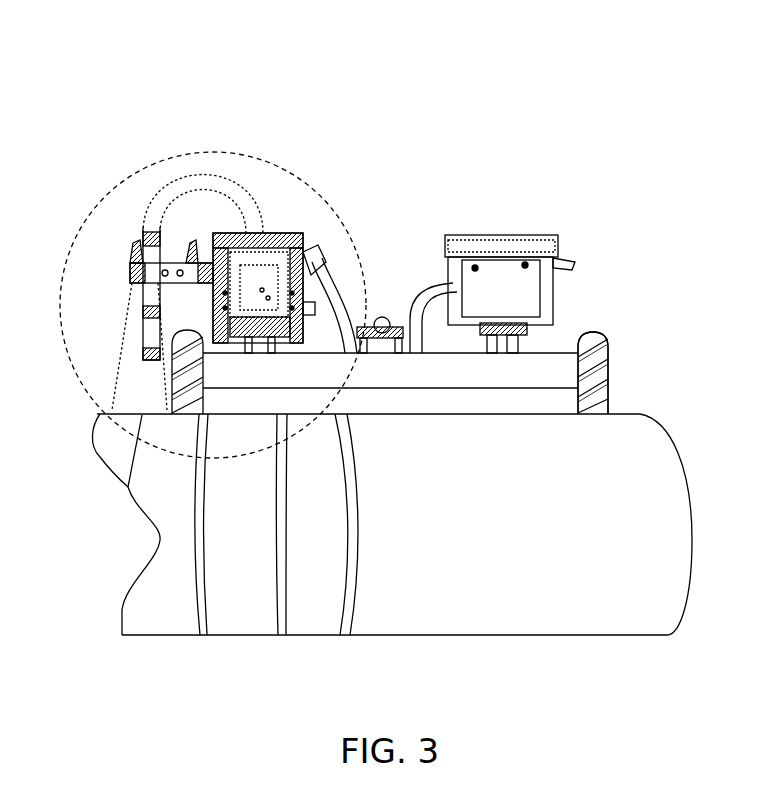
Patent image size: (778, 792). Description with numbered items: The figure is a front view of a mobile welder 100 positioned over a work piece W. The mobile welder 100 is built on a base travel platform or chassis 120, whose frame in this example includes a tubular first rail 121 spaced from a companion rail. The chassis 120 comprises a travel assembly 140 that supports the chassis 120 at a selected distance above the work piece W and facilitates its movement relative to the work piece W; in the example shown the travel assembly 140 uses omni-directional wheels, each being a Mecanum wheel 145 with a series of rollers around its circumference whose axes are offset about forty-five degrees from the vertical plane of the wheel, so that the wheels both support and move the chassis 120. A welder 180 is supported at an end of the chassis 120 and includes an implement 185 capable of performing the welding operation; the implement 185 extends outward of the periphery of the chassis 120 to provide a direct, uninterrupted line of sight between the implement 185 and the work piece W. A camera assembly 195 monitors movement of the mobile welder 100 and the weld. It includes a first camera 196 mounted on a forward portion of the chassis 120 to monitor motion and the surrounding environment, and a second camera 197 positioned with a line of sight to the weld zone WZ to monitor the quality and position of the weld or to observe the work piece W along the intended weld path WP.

The mobile welder 100 is at (298, 118).
The chassis 120 is at (432, 374).
The first rail 121 is at (487, 378).
The travel assembly 140 is at (610, 328).
The Mecanum wheel 145 is at (608, 373).
The welder 180 is at (282, 220).
The implement 185 is at (140, 256).
The camera assembly 195 is at (120, 260).
The first camera 196 is at (388, 317).
The second camera 197 is at (128, 273).
The work piece W is at (673, 525).
The weld zone WZ is at (140, 414).
The weld path WP is at (126, 466).